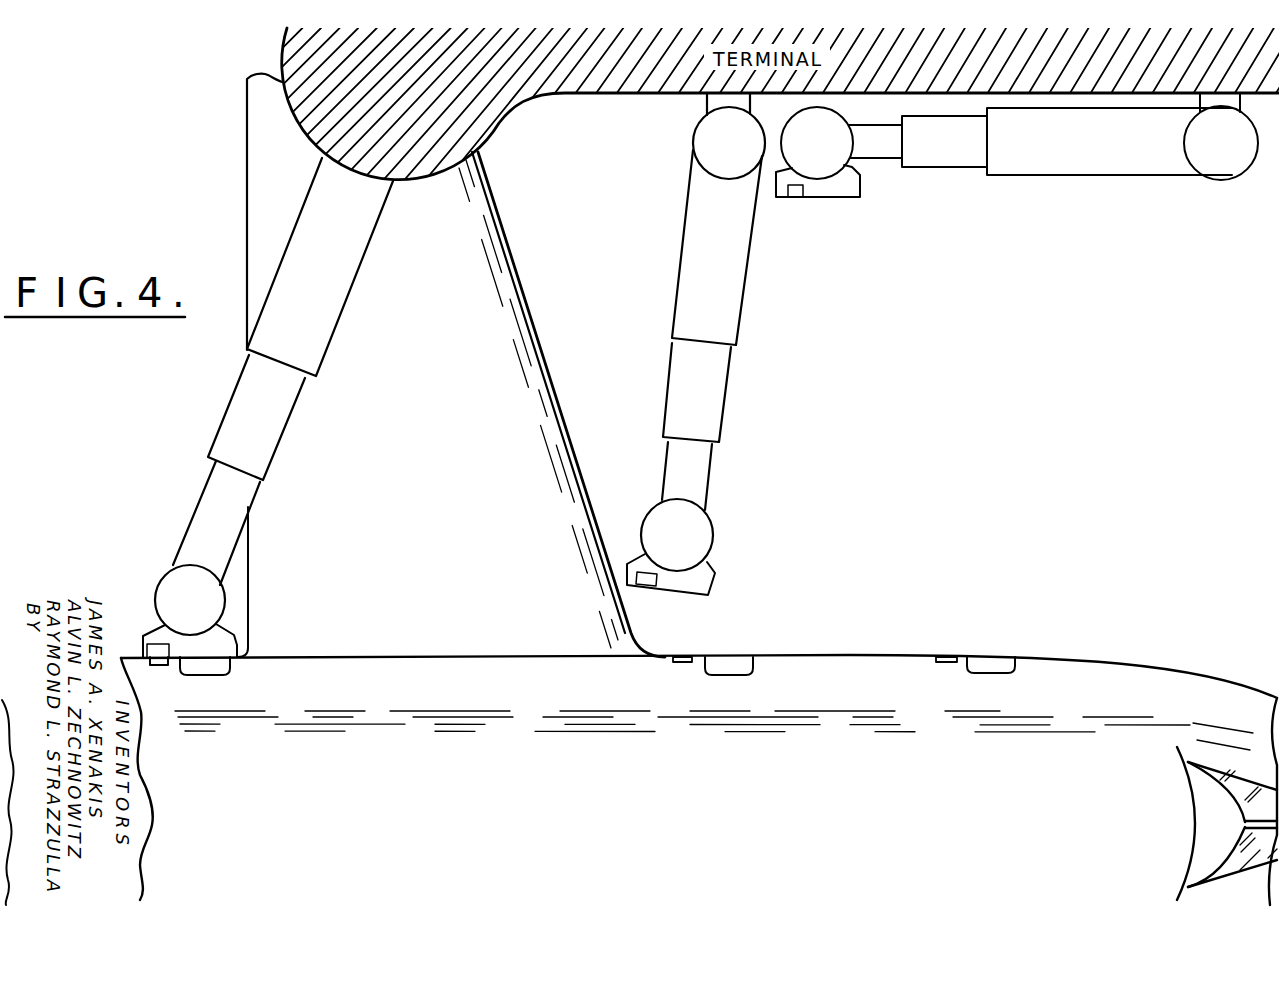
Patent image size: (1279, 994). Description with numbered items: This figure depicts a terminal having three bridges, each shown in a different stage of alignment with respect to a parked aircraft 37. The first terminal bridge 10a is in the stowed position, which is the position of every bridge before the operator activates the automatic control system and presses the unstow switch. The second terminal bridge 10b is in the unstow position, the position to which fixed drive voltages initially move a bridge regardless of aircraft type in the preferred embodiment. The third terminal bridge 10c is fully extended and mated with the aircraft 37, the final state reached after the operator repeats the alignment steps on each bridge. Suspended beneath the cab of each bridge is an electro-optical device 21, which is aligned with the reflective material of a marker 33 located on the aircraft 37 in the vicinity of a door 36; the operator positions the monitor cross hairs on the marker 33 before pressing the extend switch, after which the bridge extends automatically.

The terminal bridge 10a is at (1083, 176).
The terminal bridge 10b is at (737, 294).
The terminal bridge 10c is at (378, 218).
The electro-optical device 21 is at (797, 198).
The marker 33 is at (157, 666).
The door 36 is at (228, 665).
The aircraft 37 is at (1201, 675).